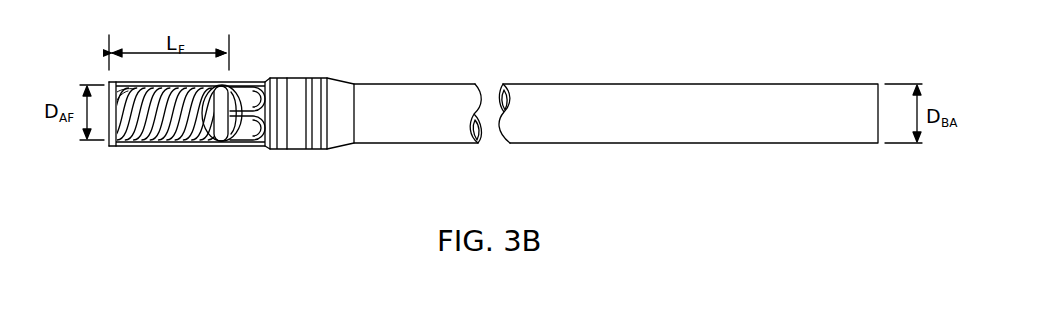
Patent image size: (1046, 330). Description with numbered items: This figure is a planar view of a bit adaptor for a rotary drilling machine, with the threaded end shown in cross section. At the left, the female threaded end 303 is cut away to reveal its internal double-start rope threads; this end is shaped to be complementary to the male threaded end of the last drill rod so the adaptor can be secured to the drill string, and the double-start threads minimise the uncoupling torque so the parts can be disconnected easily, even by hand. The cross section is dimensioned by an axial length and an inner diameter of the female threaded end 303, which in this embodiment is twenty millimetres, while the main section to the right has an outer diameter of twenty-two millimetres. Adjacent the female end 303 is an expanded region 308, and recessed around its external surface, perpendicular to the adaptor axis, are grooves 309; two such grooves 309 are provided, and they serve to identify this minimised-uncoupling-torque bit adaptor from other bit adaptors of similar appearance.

The female threaded end 303 is at (158, 146).
The expanded region 308 is at (270, 78).
The groove 309 is at (287, 80).